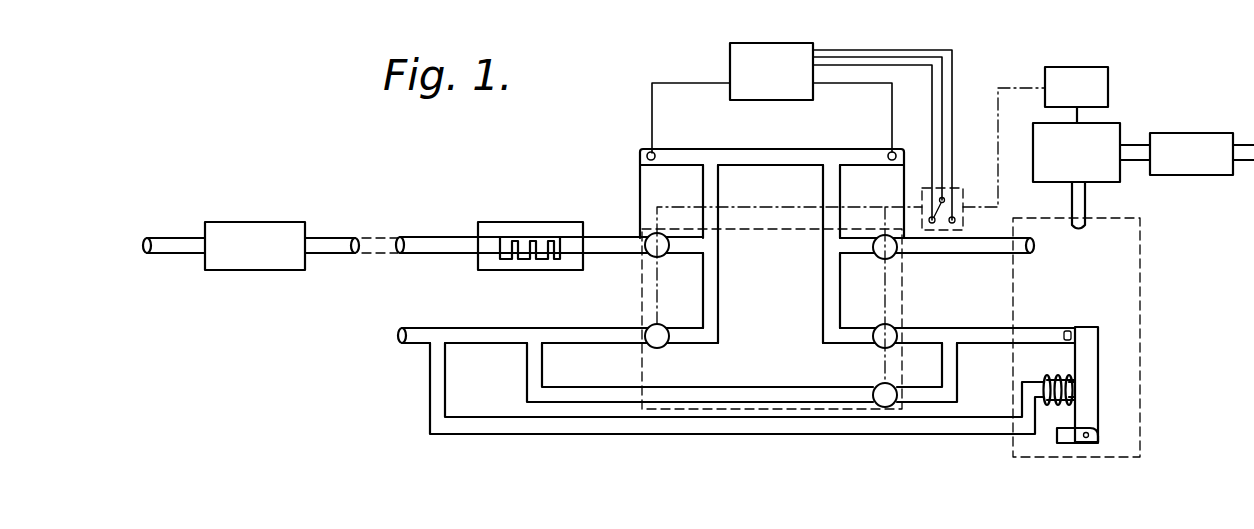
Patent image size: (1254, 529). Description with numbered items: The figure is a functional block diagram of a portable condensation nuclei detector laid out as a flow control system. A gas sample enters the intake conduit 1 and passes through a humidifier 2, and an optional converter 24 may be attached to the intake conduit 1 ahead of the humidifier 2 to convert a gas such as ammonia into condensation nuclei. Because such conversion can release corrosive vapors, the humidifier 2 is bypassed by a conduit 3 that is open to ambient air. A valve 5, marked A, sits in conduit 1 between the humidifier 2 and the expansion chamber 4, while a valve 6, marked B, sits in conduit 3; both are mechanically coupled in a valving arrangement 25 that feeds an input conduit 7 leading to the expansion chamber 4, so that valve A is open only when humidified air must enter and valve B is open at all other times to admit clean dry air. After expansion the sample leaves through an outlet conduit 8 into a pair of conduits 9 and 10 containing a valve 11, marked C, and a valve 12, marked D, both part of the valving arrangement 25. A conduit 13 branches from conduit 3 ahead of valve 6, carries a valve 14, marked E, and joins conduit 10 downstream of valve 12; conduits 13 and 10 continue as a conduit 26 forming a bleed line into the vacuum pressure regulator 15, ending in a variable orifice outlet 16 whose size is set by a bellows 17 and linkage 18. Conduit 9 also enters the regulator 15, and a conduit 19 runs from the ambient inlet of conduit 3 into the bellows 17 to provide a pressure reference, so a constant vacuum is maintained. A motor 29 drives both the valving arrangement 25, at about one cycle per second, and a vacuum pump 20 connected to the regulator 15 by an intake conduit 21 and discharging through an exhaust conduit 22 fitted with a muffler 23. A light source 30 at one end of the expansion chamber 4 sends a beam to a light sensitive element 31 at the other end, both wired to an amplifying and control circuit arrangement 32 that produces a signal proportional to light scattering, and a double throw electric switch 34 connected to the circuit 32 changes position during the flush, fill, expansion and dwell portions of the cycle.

The intake conduit 1 is at (422, 237).
The humidifier 2 is at (523, 222).
The conduit 3 is at (411, 328).
The expansion chamber 4 is at (703, 145).
The valve 5 is at (648, 236).
The valve 6 is at (666, 326).
The input conduit 7 is at (718, 185).
The outlet conduit 8 is at (840, 182).
The conduit 9 is at (940, 254).
The conduit 10 is at (926, 328).
The valve 11 is at (876, 256).
The valve 12 is at (876, 326).
The conduit 13 is at (736, 387).
The valve 14 is at (876, 385).
The vacuum pressure regulator 15 is at (1140, 268).
The variable orifice outlet 16 is at (1068, 330).
The bellows 17 is at (1060, 378).
The linkage 18 is at (1098, 396).
The conduit 19 is at (806, 436).
The vacuum pump 20 is at (1104, 124).
The intake conduit 21 is at (1085, 204).
The exhaust conduit 22 is at (1138, 158).
The muffler 23 is at (1214, 173).
The converter 24 is at (290, 208).
The valving arrangement 25 is at (642, 368).
The conduit 26 is at (987, 315).
The motor 29 is at (1108, 80).
The light source 30 is at (646, 156).
The light sensitive element 31 is at (897, 152).
The amplifying and control circuit arrangement 32 is at (798, 99).
The double throw electric switch 34 is at (966, 189).